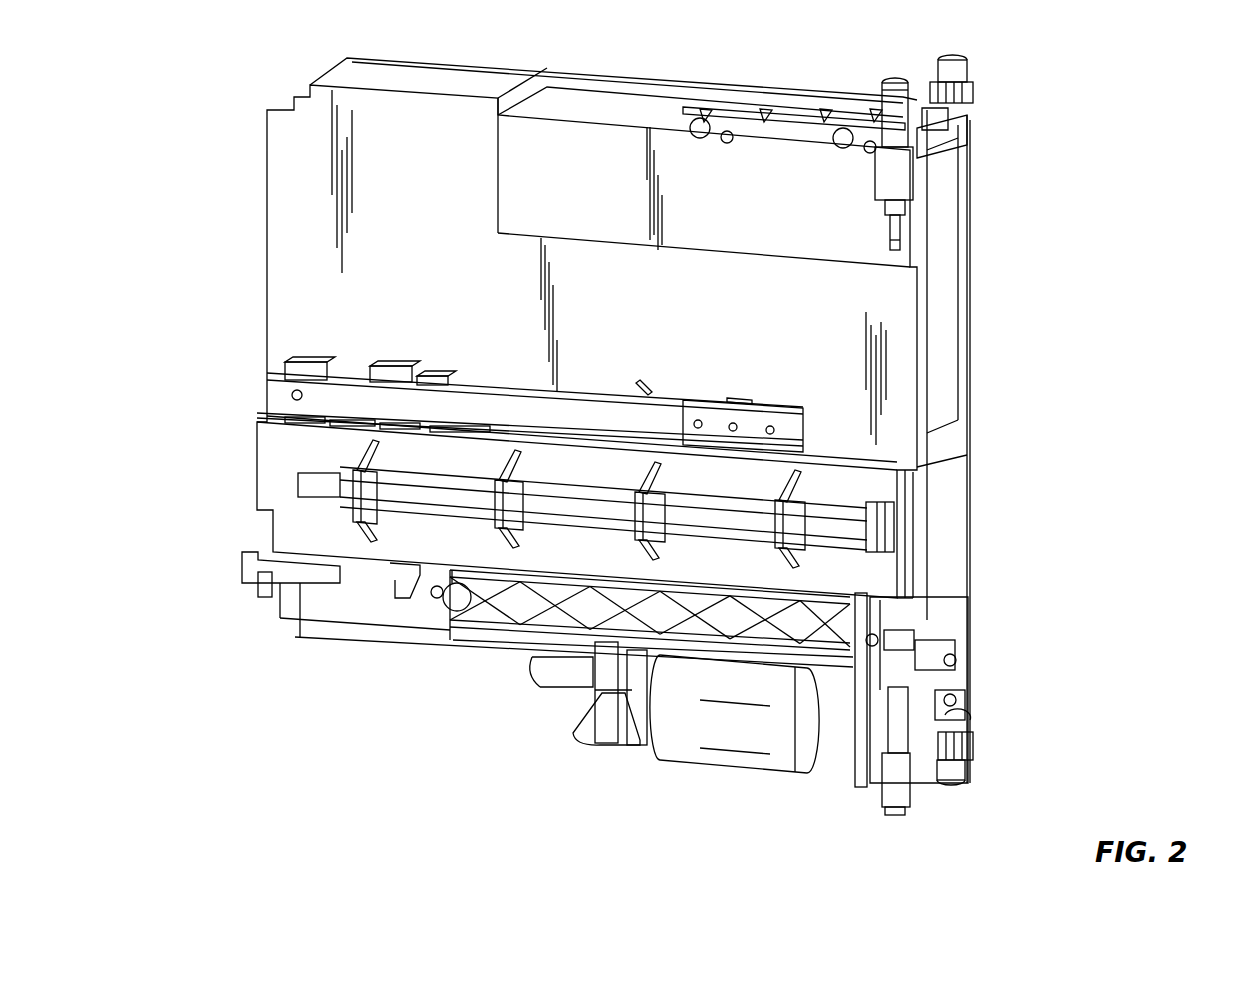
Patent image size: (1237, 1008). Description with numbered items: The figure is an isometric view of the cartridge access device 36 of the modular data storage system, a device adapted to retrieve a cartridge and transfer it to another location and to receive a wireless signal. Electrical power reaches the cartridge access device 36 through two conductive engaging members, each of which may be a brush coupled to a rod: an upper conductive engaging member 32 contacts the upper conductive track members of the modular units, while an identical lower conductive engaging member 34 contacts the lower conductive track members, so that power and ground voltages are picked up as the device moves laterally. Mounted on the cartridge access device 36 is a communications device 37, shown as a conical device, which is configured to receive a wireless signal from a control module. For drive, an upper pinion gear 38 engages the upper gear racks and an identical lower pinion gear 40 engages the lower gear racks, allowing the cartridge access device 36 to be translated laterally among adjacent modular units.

The upper conductive engaging member 32 is at (893, 75).
The lower conductive engaging member 34 is at (892, 817).
The cartridge access device 36 is at (1122, 223).
The communications device 37 is at (582, 747).
The upper pinion gear 38 is at (973, 90).
The lower pinion gear 40 is at (973, 743).